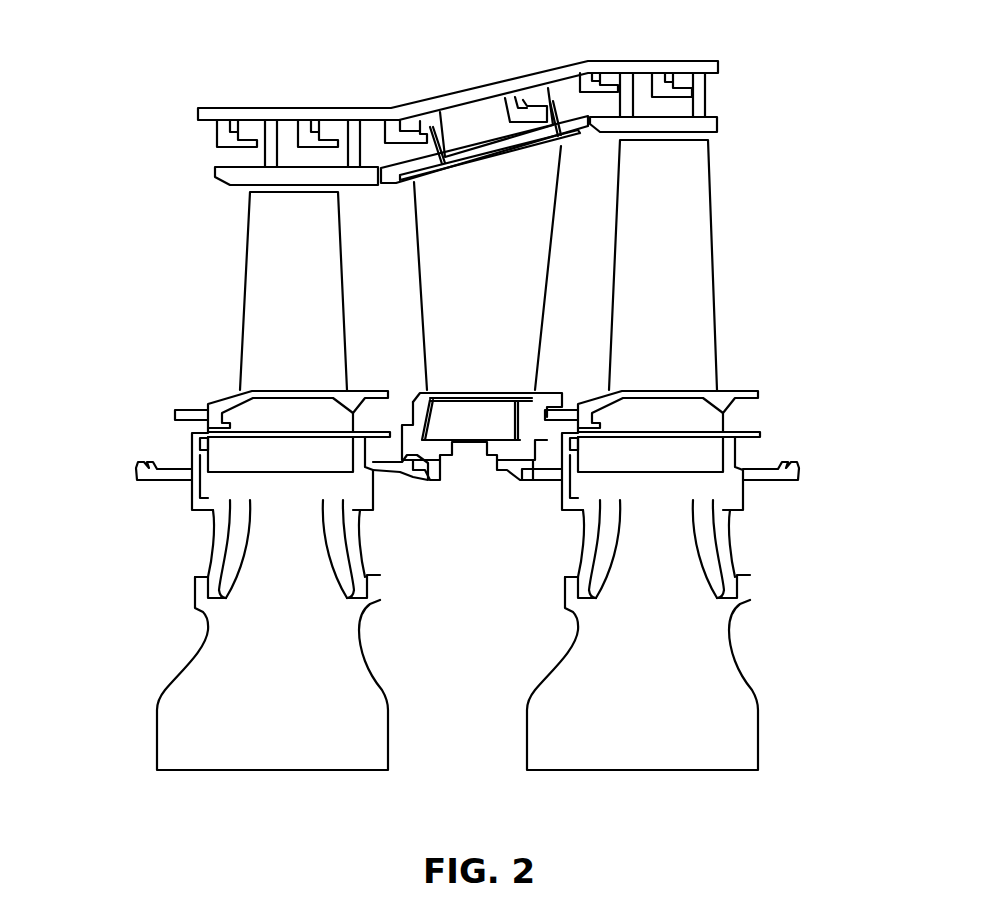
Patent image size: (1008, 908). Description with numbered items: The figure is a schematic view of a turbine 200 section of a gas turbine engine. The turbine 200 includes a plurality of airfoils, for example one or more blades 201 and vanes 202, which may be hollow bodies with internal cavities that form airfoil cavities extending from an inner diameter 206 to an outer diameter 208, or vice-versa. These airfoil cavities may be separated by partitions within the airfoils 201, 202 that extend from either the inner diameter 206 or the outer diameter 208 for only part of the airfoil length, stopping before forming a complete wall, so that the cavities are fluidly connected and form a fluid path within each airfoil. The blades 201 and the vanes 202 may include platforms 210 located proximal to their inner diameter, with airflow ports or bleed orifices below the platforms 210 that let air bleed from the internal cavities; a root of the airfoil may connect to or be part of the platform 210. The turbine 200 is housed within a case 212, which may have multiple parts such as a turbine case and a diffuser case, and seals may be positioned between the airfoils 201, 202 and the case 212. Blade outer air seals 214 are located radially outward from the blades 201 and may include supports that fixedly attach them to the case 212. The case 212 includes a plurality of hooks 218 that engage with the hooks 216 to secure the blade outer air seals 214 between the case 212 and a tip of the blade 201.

The turbine 200 is at (133, 68).
The blade 201 is at (325, 240).
The vane 202 is at (524, 218).
The inner diameter 206 is at (409, 383).
The outer diameter 208 is at (236, 208).
The platform 210 is at (548, 393).
The case 212 is at (478, 92).
The blade outer air seal 214 is at (285, 173).
The hook 216 is at (272, 140).
The hook 218 is at (220, 126).